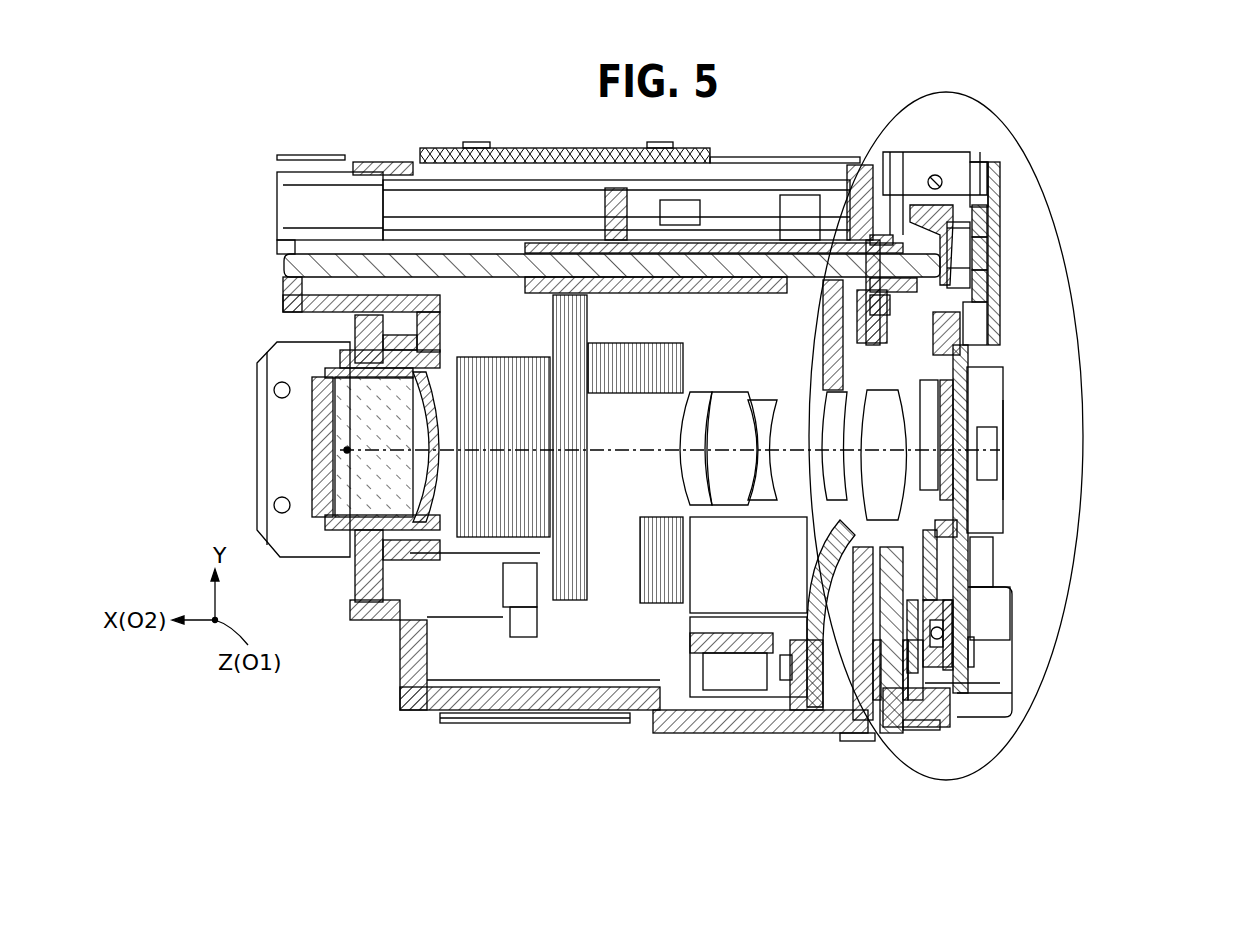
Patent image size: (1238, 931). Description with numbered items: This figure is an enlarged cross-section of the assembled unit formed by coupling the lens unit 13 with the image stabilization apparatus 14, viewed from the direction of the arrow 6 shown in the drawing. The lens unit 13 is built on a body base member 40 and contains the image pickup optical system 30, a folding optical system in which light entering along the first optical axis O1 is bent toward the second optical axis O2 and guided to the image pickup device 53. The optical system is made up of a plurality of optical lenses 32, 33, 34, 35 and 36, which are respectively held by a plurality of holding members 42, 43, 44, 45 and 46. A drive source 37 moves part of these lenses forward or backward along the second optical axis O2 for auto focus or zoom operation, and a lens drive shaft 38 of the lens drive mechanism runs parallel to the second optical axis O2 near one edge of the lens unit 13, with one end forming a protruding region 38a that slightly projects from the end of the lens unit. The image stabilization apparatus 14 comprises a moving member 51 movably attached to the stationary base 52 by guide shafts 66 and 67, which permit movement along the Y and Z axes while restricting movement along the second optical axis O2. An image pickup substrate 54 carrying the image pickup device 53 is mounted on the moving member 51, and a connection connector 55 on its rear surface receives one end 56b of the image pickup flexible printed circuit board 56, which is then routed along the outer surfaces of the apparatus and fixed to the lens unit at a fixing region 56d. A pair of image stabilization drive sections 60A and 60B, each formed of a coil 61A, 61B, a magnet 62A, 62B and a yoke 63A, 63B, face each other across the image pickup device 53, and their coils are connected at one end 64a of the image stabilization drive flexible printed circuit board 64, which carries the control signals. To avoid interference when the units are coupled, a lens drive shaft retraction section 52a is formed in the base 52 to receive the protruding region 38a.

The arrow [6] 6 is at (1024, 170).
The lens unit 13 is at (528, 126).
The image stabilization apparatus 14 is at (938, 131).
The image pickup optical system 30 is at (800, 796).
The optical lens 32 is at (357, 490).
The optical lens 33 is at (422, 510).
The optical lens 34 is at (880, 495).
The optical lens 35 is at (693, 737).
The optical lens 36 is at (770, 737).
The drive source 37 is at (345, 200).
The lens drive shaft 38 is at (445, 255).
The protruding region 38a is at (915, 200).
The body base member 40 is at (858, 738).
The holding member 42 is at (320, 505).
The holding member 43 is at (372, 532).
The holding member 44 is at (655, 733).
The holding member 45 is at (730, 733).
The holding member 46 is at (810, 735).
The moving member 51 is at (990, 222).
The base 52 is at (920, 742).
The lens drive shaft retraction section 52a is at (937, 278).
The image pickup device 53 is at (990, 518).
The image pickup substrate 54 is at (1000, 495).
The connection connector 55 is at (975, 655).
The image pickup flexible printed circuit board 56 is at (1015, 595).
The one end of the image pickup FPC 56b is at (1000, 648).
The fixing region 56d is at (843, 740).
The image stabilization drive section 60A is at (1093, 266).
The coil 61A is at (988, 255).
The magnet 62A is at (985, 280).
The yoke 63A is at (990, 305).
The image stabilization drive section 60B is at (1004, 728).
The coil 61B is at (960, 682).
The magnet 62B is at (930, 714).
The yoke 63B is at (900, 702).
The image stabilization drive flexible printed circuit board 64 is at (1005, 442).
The one end of the image stabilization drive FPC 64a is at (1000, 488).
The guide shaft 66 is at (1000, 178).
The guide shaft 67 is at (965, 690).
The first optical axis O1 is at (347, 450).
The second optical axis O2 is at (380, 468).